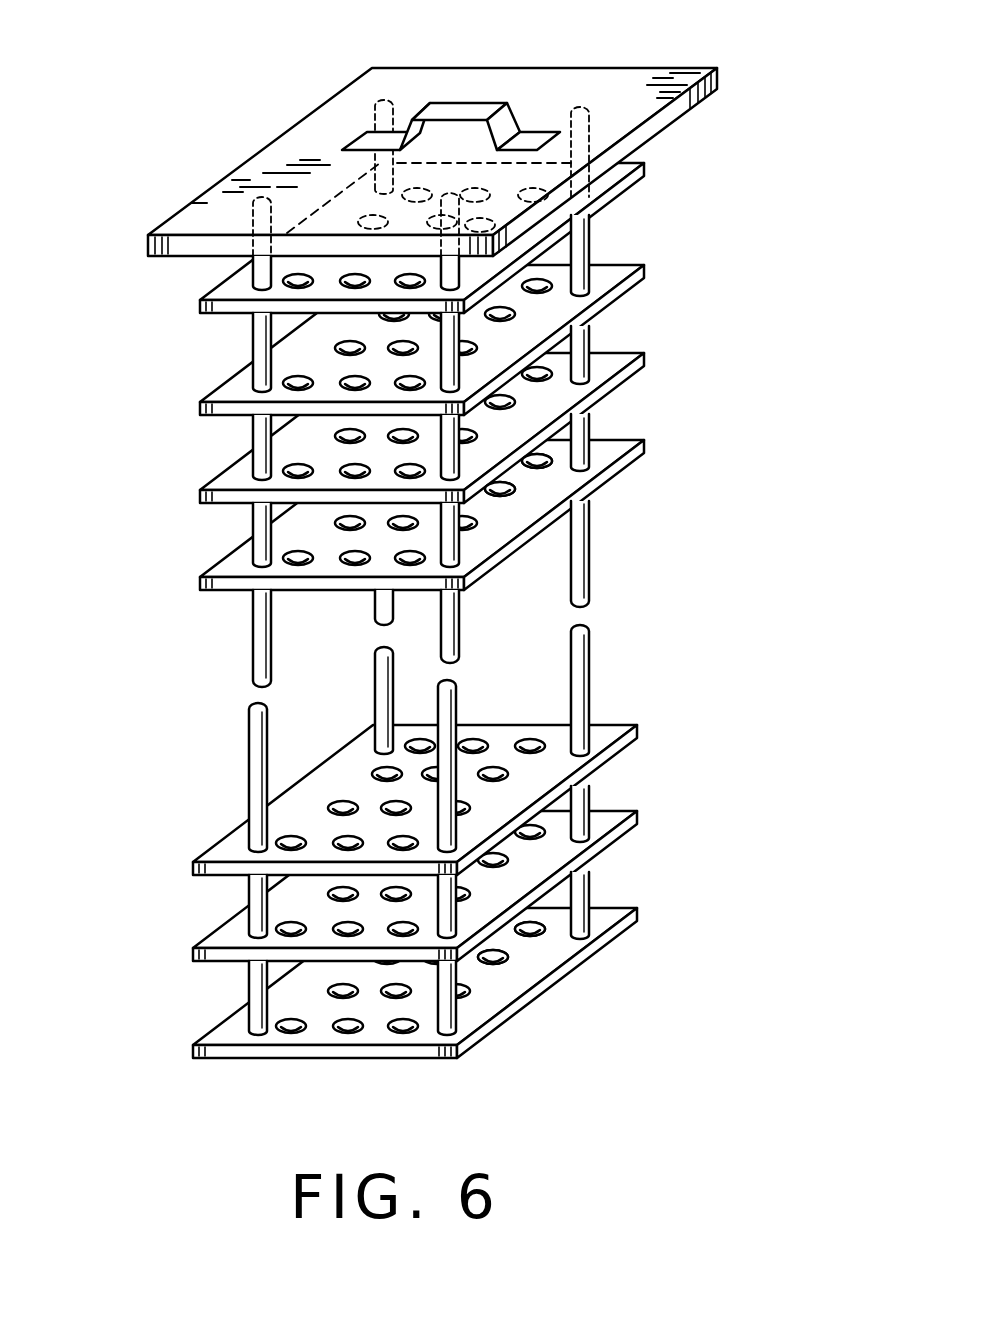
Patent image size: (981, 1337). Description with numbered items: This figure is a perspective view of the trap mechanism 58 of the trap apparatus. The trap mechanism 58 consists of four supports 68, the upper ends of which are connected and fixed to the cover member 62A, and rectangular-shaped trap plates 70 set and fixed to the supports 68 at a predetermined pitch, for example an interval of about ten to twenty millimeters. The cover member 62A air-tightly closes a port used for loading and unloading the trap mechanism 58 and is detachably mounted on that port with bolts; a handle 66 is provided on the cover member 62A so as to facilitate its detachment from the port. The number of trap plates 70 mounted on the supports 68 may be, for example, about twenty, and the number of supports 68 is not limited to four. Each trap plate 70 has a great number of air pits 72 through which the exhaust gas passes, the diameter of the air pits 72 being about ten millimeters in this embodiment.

The trap mechanism 58 is at (398, 533).
The cover member 62A is at (629, 90).
The handle 66 is at (493, 103).
The support 68 is at (377, 610).
The trap plate 70 is at (648, 267).
The air pit 72 is at (510, 492).